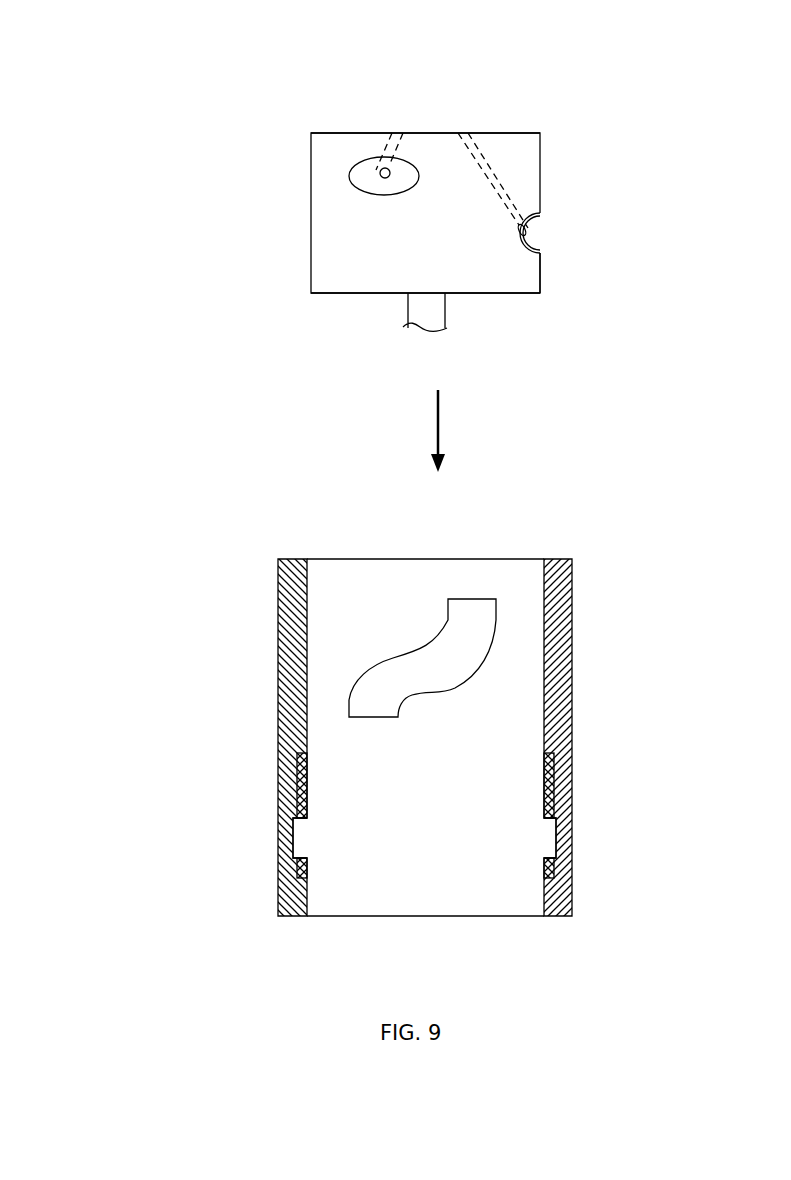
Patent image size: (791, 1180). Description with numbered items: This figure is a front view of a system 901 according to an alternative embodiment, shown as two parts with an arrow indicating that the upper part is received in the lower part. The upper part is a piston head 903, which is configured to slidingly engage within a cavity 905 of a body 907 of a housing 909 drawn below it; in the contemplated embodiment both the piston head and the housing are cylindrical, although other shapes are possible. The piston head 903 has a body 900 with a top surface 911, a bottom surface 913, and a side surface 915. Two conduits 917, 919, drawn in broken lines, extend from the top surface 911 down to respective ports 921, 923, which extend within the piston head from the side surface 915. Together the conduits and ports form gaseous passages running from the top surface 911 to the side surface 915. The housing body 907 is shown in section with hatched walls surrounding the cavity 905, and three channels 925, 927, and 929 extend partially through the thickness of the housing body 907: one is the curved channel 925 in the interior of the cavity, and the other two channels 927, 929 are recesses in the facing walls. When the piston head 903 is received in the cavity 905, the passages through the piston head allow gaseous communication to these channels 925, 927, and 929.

The body 900 is at (311, 180).
The system 901 is at (128, 82).
The piston head 903 is at (193, 222).
The cavity 905 is at (516, 733).
The body 907 is at (278, 625).
The housing 909 is at (212, 841).
The top surface 911 is at (497, 133).
The bottom surface 913 is at (350, 298).
The side surface 915 is at (543, 278).
The conduit 917 is at (405, 132).
The conduit 919 is at (505, 185).
The port 921 is at (370, 157).
The port 923 is at (534, 240).
The channel 925 is at (413, 612).
The channel 927 is at (313, 840).
The channel 929 is at (536, 838).